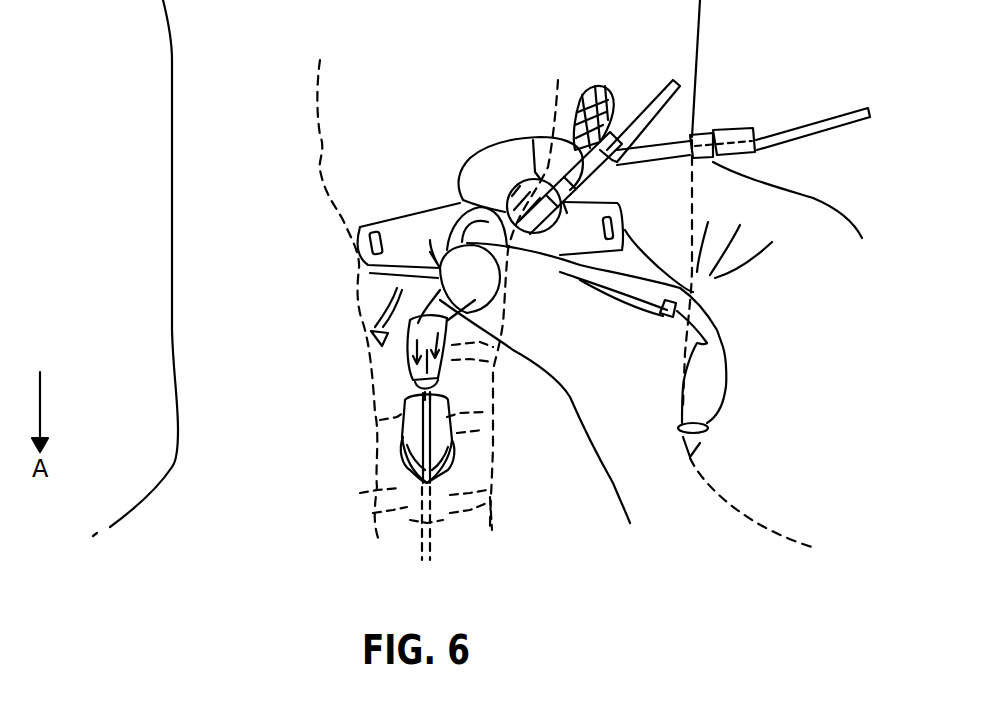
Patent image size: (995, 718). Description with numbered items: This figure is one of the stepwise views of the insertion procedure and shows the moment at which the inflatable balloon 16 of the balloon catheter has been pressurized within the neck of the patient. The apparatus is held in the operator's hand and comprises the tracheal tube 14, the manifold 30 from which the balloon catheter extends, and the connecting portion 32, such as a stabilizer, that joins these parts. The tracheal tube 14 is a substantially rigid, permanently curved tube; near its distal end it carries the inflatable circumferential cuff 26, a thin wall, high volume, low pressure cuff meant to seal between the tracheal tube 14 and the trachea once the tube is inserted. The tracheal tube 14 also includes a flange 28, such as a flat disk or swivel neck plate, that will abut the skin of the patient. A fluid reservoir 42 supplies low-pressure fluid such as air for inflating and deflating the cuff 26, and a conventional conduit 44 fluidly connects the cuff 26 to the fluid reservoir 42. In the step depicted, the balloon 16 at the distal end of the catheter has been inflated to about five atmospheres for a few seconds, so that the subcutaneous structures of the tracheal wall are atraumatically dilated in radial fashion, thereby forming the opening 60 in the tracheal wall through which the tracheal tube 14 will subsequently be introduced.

The tracheal tube 14 is at (437, 277).
The inflatable balloon 16 is at (403, 418).
The inflatable circumferential cuff 26 is at (410, 348).
The flange 28 is at (403, 211).
The manifold 30 is at (598, 83).
The connecting portion 32 is at (546, 180).
The fluid reservoir 42 is at (730, 377).
The conduit 44 is at (707, 311).
The opening in the tracheal wall 60 is at (413, 473).